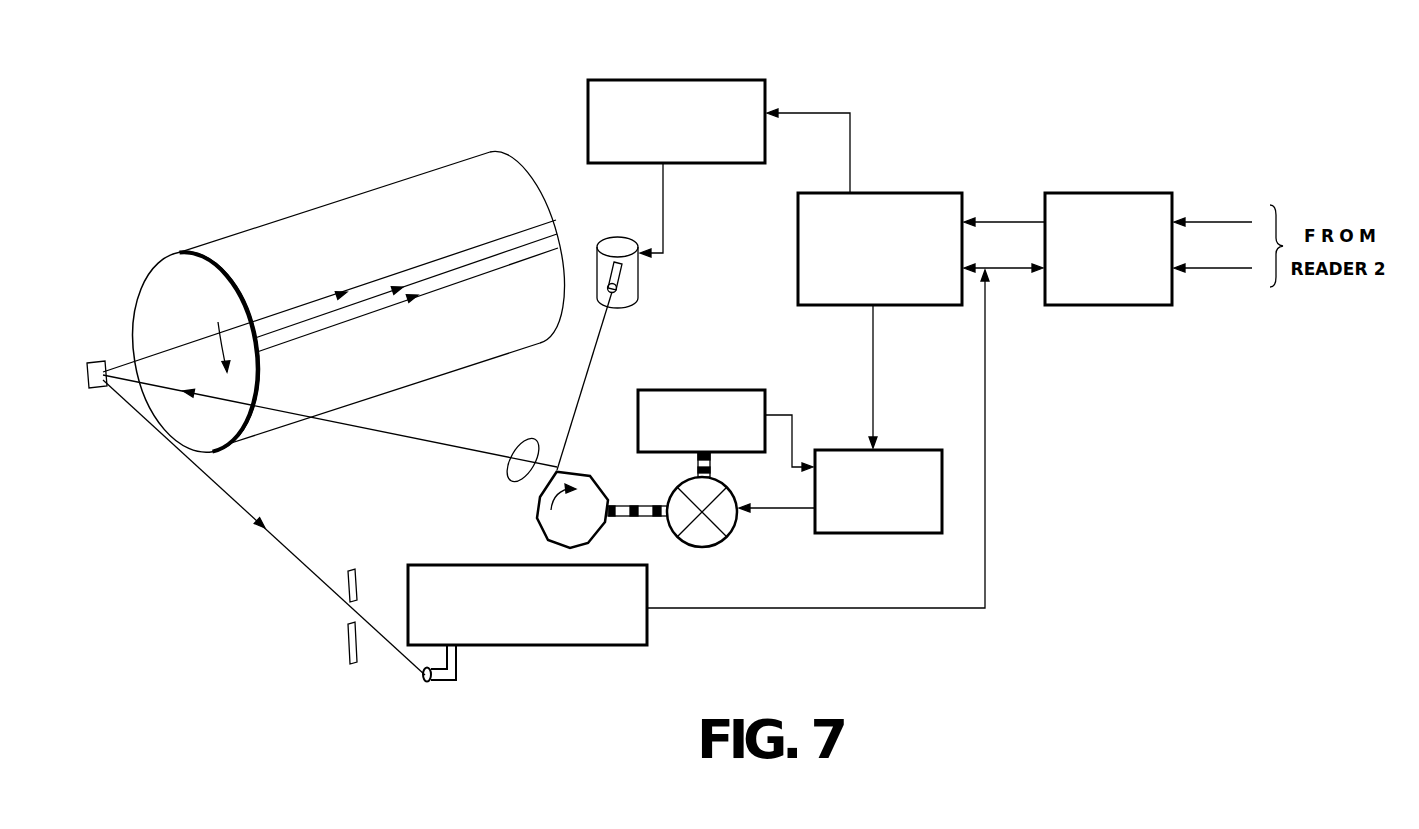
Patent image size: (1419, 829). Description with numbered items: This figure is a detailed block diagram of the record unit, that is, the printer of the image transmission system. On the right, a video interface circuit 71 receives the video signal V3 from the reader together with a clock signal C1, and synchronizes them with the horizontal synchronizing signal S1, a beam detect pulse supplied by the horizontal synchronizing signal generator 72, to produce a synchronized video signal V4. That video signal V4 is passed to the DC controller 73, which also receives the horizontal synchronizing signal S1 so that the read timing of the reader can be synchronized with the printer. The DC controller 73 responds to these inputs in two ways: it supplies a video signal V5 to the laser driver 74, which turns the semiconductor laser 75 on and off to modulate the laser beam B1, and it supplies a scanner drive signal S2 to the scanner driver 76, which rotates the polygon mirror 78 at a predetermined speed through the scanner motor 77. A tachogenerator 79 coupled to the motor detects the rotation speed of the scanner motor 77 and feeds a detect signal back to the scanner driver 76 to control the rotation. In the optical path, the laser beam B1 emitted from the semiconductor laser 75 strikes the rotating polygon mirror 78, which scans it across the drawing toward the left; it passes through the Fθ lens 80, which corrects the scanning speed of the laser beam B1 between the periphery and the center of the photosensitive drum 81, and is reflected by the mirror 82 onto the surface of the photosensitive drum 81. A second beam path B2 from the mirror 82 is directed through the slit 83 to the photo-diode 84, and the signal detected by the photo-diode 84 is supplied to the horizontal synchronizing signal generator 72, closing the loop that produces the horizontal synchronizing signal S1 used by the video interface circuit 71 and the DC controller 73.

The video interface circuit 71 is at (1117, 193).
The horizontal synchronizing signal generator 72 is at (578, 645).
The DC controller 73 is at (903, 195).
The laser driver 74 is at (660, 80).
The semiconductor laser 75 is at (639, 285).
The scanner driver 76 is at (897, 450).
The scanner motor 77 is at (712, 548).
The polygon mirror 78 is at (590, 476).
The tachogenerator 79 is at (693, 390).
The Fθ lens 80 is at (522, 437).
The photosensitive drum 81 is at (513, 157).
The mirror 82 is at (97, 392).
The slit 83 is at (358, 582).
The photo-diode 84 is at (426, 683).
The laser beam B1 is at (416, 429).
The laser beam B2 is at (262, 506).
The horizontal synchronizing signal S1 is at (800, 610).
The scanner drive signal S2 is at (871, 338).
The video signal V3 is at (1203, 220).
The video signal V4 is at (990, 220).
The video signal V5 is at (793, 110).
The clock signal C1 is at (1210, 273).